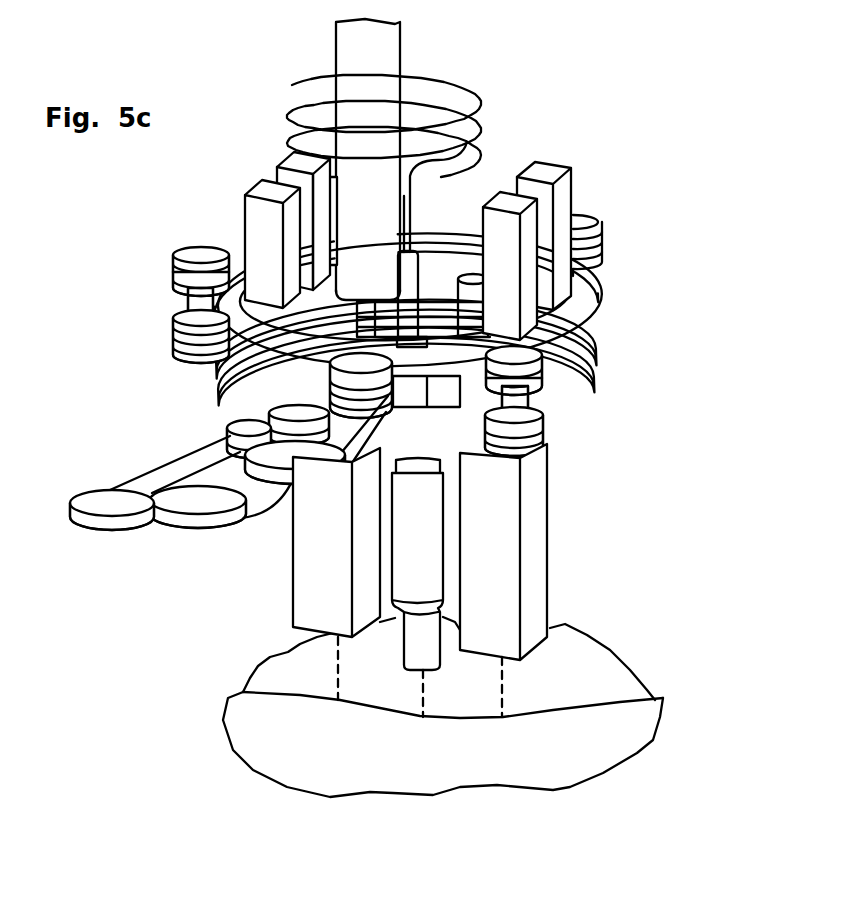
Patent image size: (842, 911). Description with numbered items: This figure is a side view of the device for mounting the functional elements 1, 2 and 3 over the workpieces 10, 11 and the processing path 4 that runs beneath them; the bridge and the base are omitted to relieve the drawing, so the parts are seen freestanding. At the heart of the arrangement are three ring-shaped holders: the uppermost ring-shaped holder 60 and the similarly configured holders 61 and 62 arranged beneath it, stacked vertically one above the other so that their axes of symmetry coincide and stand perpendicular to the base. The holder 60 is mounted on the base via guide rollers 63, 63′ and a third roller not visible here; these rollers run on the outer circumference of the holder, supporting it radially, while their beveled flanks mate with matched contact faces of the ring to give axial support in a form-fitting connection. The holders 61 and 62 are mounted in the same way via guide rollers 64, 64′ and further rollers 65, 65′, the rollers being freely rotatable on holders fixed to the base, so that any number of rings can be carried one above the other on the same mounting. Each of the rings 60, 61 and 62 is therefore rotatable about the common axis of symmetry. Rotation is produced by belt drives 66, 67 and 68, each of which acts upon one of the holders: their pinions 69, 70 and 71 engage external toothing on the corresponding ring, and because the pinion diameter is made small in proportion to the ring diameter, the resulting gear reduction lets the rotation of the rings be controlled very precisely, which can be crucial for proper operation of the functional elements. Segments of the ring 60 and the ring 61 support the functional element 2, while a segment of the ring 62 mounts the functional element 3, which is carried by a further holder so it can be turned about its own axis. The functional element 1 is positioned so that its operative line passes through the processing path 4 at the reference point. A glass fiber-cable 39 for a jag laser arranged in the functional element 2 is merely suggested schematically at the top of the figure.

The glass fiber-cable 39 is at (481, 92).
The guide roller 63 is at (598, 230).
The guide roller 64 is at (597, 262).
The guide roller 65 is at (597, 292).
The ring-shaped holder 60 is at (588, 302).
The holder 61 is at (588, 353).
The holder 62 is at (600, 388).
The guide roller 63′ is at (176, 268).
The guide roller 64′ is at (178, 323).
The guide roller 65′ is at (178, 347).
The pinion 69 is at (325, 372).
The pinion 70 is at (267, 420).
The pinion 71 is at (235, 440).
The belt drive 66 is at (297, 455).
The belt drive 67 is at (202, 505).
The belt drive 68 is at (109, 508).
The functional element 1 is at (420, 512).
The functional element 2 is at (500, 565).
The functional element 3 is at (305, 606).
The workpiece 11 is at (605, 677).
The workpiece 10 is at (634, 727).
The processing path 4 is at (580, 712).